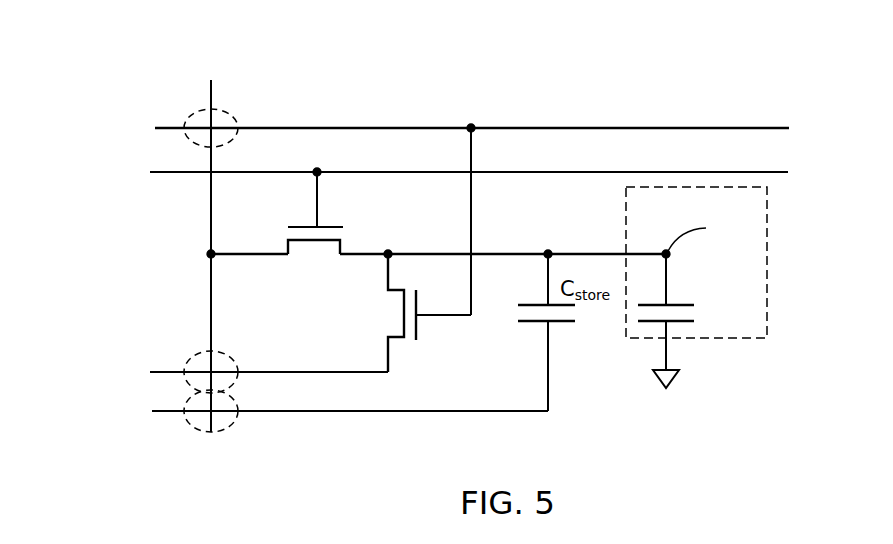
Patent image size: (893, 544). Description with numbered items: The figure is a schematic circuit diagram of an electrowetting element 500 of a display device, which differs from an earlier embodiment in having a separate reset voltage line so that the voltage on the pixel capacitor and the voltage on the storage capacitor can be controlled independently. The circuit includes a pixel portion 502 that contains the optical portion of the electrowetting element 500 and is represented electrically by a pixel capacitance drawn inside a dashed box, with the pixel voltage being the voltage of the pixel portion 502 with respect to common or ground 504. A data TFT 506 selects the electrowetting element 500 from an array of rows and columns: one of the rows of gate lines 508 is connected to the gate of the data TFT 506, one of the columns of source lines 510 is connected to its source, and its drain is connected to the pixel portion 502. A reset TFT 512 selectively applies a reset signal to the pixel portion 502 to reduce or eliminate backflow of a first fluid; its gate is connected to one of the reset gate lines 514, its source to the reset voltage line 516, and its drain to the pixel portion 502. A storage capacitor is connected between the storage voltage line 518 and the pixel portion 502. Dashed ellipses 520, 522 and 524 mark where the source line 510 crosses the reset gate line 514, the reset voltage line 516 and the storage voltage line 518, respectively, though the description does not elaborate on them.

The electrowetting element 500 is at (736, 64).
The pixel portion 502 is at (768, 273).
The ground 504 is at (661, 386).
The data TFT 506 is at (317, 263).
The gate lines 508 is at (148, 173).
The source lines 510 is at (211, 79).
The reset TFT 512 is at (385, 316).
The reset gate lines 514 is at (158, 125).
The reset voltage line 516 is at (148, 372).
The storage voltage line 518 is at (158, 413).
The crossing of source line and reset gate line 520 is at (262, 101).
The crossing of source line and reset voltage line 522 is at (200, 353).
The crossing of source line and storage voltage line 524 is at (238, 405).